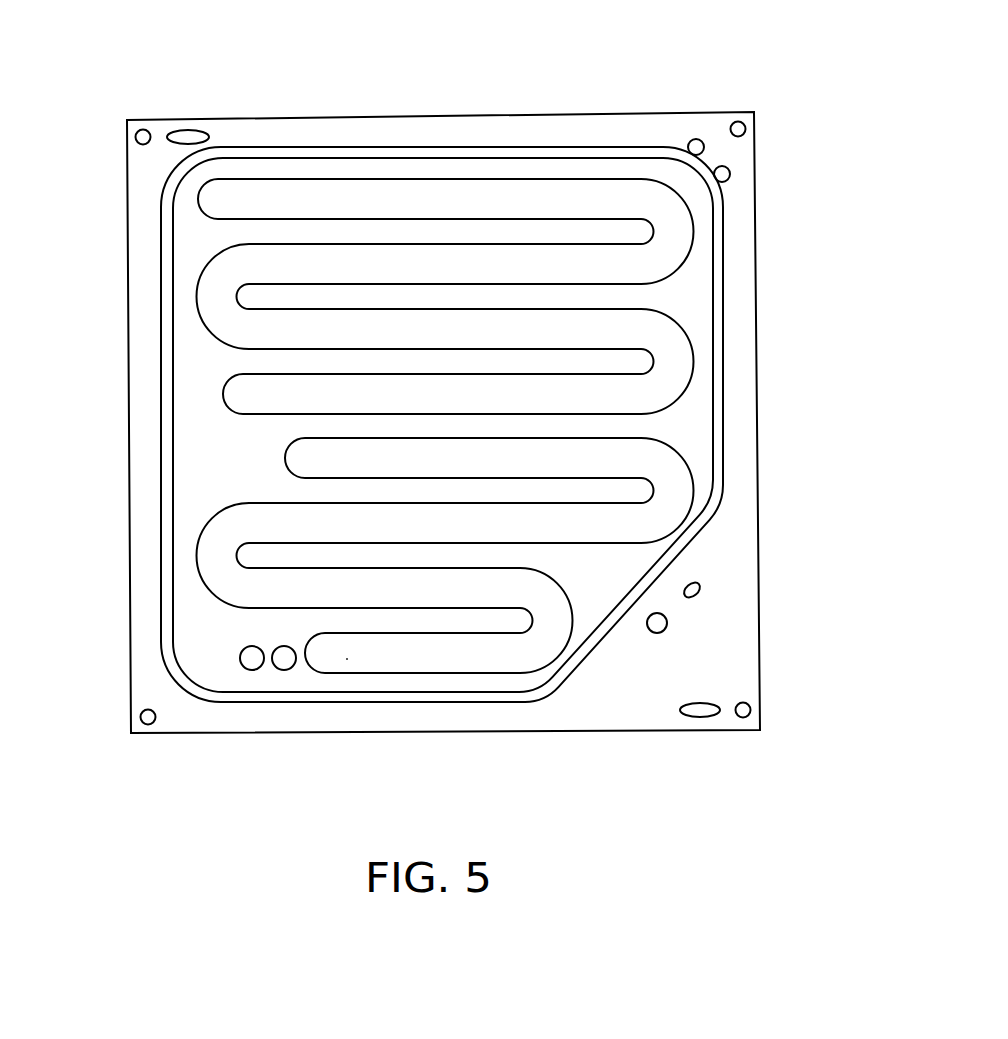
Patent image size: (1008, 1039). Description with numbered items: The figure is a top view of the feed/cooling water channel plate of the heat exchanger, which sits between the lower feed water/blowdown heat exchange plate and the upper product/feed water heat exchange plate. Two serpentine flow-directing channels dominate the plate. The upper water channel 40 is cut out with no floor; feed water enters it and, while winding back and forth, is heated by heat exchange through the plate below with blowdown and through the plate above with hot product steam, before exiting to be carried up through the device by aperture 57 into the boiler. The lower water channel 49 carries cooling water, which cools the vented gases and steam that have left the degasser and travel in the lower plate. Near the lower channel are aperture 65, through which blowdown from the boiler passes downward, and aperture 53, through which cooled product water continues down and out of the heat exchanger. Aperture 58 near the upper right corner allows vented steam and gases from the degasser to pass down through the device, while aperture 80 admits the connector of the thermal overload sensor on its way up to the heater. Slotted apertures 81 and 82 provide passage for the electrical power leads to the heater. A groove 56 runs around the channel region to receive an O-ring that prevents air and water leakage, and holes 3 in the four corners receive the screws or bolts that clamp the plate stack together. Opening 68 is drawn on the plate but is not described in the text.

The holes 3 is at (143, 130).
The water channel 40 is at (243, 397).
The water channel 49 is at (347, 658).
The aperture 53 is at (290, 668).
The grooves 56 is at (713, 370).
The aperture 57 is at (693, 143).
The aperture 58 is at (727, 180).
The aperture 65 is at (255, 669).
The port hole 68 is at (650, 632).
The aperture 80 is at (698, 597).
The aperture 81 is at (183, 134).
The aperture 82 is at (699, 717).